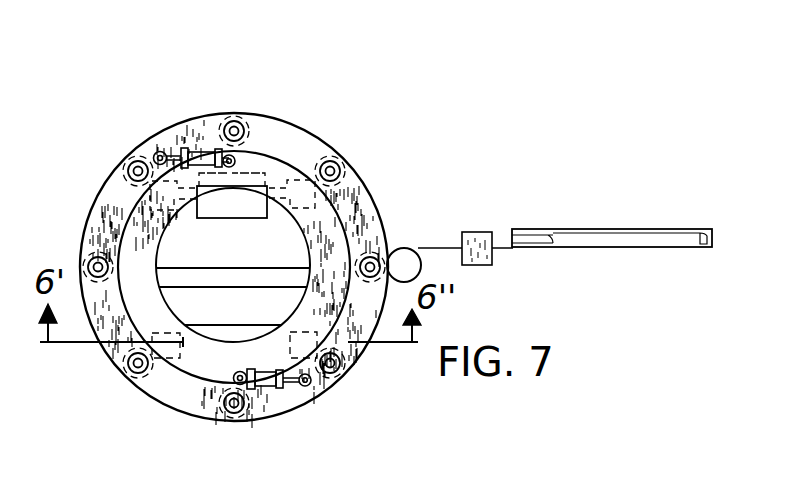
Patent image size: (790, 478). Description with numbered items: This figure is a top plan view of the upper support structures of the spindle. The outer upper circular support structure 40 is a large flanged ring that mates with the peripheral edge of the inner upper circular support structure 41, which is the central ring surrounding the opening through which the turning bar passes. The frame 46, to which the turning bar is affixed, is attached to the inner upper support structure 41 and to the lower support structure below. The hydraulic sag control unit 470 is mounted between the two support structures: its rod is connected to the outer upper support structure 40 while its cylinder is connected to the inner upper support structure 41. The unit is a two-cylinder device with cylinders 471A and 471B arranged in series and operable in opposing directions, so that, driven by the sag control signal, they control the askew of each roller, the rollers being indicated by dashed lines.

The upper circular support structure 40 is at (325, 150).
The inner upper circular support structure 41 is at (386, 233).
The frame 46 is at (331, 253).
The hydraulic sag control unit 470 is at (255, 207).
The cylinder 471A is at (198, 150).
The cylinder 471B is at (265, 390).